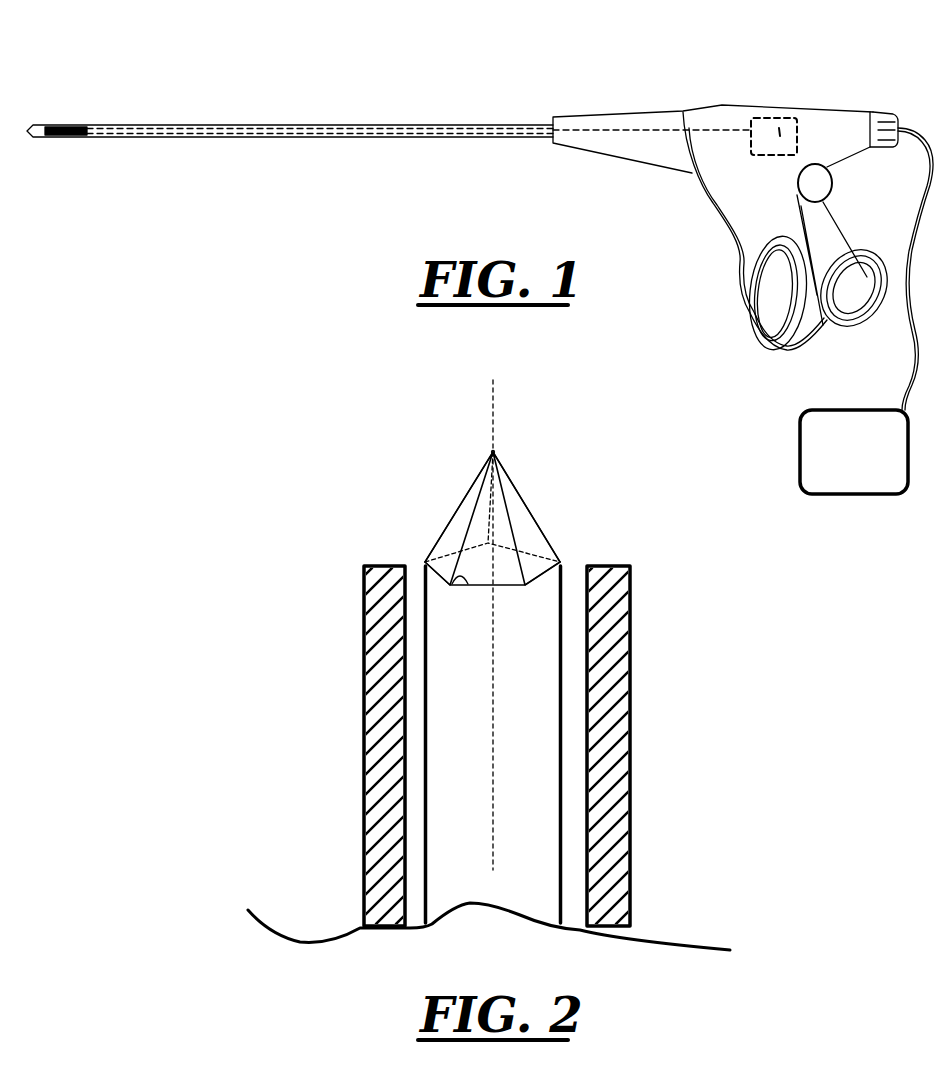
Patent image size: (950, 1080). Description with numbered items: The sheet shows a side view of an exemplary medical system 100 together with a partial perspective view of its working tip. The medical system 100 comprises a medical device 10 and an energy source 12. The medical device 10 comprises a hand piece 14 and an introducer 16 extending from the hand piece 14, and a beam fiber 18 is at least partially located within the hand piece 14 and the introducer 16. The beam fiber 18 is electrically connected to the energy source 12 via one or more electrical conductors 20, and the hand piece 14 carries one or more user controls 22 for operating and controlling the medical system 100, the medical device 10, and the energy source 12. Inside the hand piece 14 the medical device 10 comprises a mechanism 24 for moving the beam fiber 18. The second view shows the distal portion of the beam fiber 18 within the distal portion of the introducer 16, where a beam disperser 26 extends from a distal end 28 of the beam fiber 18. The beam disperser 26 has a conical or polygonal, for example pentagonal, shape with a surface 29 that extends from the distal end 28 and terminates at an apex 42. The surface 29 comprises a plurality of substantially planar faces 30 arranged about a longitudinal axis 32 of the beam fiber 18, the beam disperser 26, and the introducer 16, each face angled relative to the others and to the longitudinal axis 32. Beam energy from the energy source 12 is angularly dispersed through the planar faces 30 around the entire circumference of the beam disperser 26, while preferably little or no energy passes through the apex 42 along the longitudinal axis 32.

In FIG. 1, the medical system 100 is at (240, 60).
In FIG. 1, the medical device 10 is at (686, 92).
In FIG. 1, the energy source 12 is at (866, 468).
In FIG. 1, the hand piece 14 is at (837, 118).
In FIG. 1, the introducer 16 is at (508, 124).
In FIG. 2, the introducer 16 is at (365, 676).
In FIG. 1, the beam fiber 18 is at (340, 124).
In FIG. 2, the beam fiber 18 is at (537, 707).
In FIG. 1, the electrical conductors 20 is at (917, 362).
In FIG. 1, the user controls 22 is at (745, 306).
In FIG. 1, the mechanism 24 is at (787, 115).
In FIG. 2, the beam disperser 26 is at (468, 466).
In FIG. 2, the distal end 28 is at (450, 575).
In FIG. 2, the surface 29 is at (566, 541).
In FIG. 2, the planar faces 30 is at (521, 494).
In FIG. 2, the longitudinal axis 32 is at (492, 397).
In FIG. 2, the apex 42 is at (496, 452).